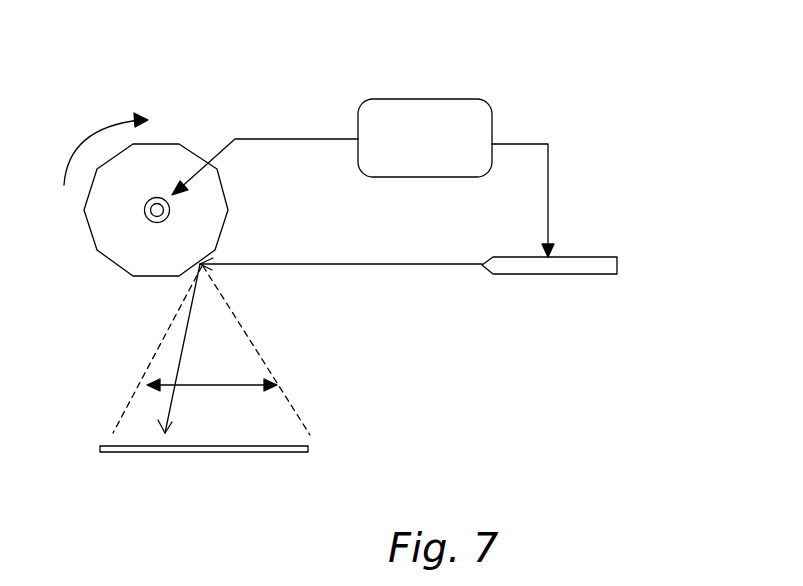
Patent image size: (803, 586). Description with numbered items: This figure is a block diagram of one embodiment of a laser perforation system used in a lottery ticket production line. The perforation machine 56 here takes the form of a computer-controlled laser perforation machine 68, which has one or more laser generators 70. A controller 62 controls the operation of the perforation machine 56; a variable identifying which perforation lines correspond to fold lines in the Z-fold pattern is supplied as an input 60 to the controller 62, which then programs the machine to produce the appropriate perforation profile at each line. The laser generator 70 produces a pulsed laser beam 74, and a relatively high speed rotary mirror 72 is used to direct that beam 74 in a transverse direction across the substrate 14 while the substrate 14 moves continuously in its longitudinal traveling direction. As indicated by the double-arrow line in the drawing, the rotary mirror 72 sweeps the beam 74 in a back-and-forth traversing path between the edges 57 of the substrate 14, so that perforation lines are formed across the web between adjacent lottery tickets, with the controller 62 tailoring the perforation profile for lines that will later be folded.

The perforation machine 56 is at (617, 78).
The rotary mirror 72 is at (110, 263).
The laser perforation machine 68 is at (275, 131).
The controller 62 is at (422, 178).
The laser generator 70 is at (550, 275).
The input 60 is at (350, 264).
The pulsed laser beam 74 is at (178, 372).
The sides 57 is at (100, 447).
The substrate 14 is at (187, 453).